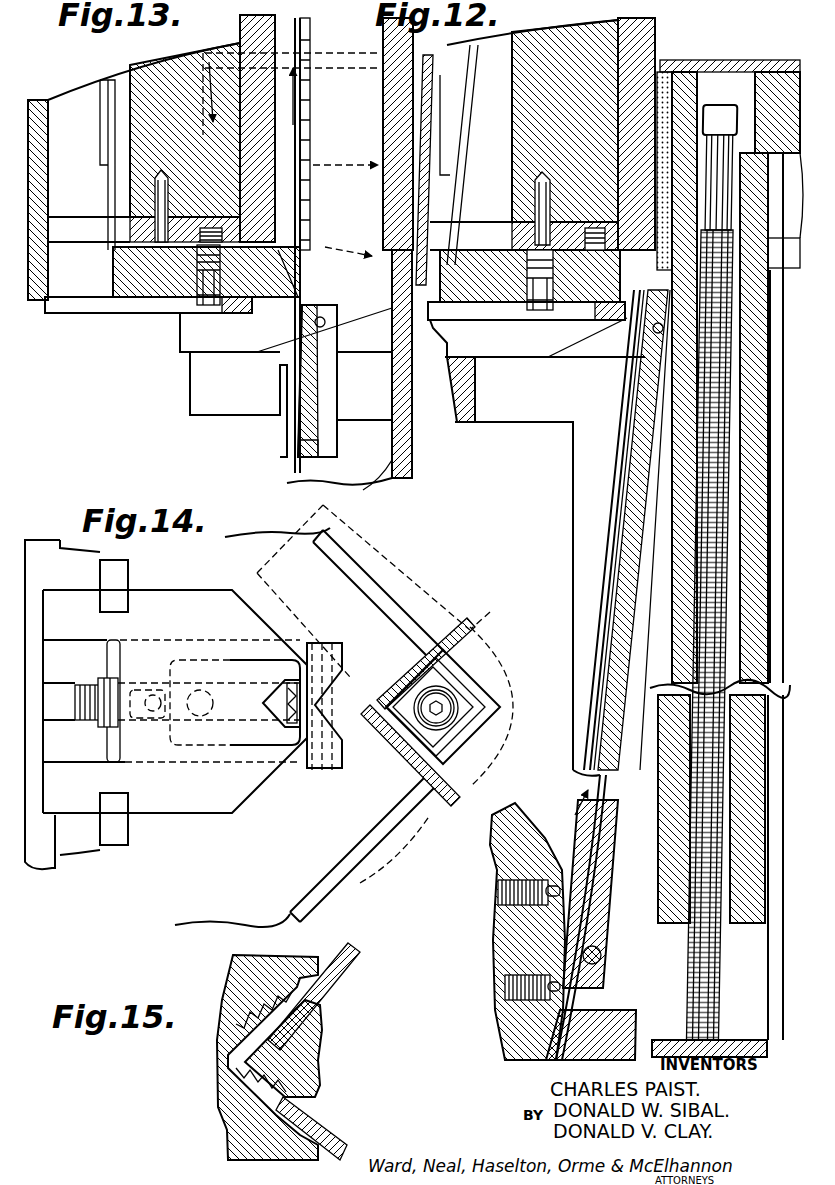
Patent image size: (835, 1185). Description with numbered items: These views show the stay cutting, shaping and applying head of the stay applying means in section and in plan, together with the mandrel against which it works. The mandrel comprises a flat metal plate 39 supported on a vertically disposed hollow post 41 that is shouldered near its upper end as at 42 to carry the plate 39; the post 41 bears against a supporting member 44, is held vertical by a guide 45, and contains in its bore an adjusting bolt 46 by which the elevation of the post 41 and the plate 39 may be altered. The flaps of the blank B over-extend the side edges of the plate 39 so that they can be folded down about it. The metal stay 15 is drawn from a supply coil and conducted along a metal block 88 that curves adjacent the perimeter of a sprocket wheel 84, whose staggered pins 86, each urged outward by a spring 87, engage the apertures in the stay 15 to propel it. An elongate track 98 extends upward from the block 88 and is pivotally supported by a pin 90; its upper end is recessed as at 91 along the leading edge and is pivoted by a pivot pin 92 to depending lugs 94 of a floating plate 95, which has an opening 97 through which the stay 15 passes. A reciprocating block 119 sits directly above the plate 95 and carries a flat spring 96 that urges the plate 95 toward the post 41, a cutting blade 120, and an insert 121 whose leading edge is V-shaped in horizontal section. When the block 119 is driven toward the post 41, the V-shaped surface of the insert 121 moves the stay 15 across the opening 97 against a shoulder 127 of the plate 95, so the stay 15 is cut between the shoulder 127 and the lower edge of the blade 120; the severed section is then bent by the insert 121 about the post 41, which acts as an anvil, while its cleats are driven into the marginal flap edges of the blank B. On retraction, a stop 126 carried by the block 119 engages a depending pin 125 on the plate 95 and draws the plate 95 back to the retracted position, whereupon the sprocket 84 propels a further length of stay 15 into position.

In FIG. 13, the metal stay 15 is at (294, 386).
In FIG. 12, the metal stay 15 is at (606, 545).
In FIG. 14, the metal stay 15 is at (278, 718).
In FIG. 15, the metal stay 15 is at (258, 1022).
In FIG. 12, the flat metal plate 39 is at (780, 75).
In FIG. 14, the flat metal plate 39 is at (449, 698).
In FIG. 13, the hollow post 41 is at (392, 478).
In FIG. 12, the hollow post 41 is at (757, 537).
In FIG. 14, the hollow post 41 is at (412, 760).
In FIG. 15, the hollow post 41 is at (322, 1040).
In FIG. 12, the shoulder 42 is at (770, 190).
In FIG. 14, the shoulder 42 is at (472, 702).
In FIG. 12, the supporting member 44 is at (742, 1040).
In FIG. 12, the guide 45 is at (772, 262).
In FIG. 12, the adjusting bolt 46 is at (735, 1005).
In FIG. 14, the adjusting bolt 46 is at (460, 688).
In FIG. 12, the sprocket wheel 84 is at (510, 836).
In FIG. 12, the pin 86 is at (500, 892).
In FIG. 12, the spring 87 is at (612, 835).
In FIG. 12, the metal block 88 is at (612, 1010).
In FIG. 12, the pin 90 is at (600, 950).
In FIG. 13, the recess 91 is at (328, 385).
In FIG. 12, the recess 91 is at (655, 405).
In FIG. 14, the recess 91 is at (324, 690).
In FIG. 13, the pivot pin 92 is at (326, 320).
In FIG. 12, the pivot pin 92 is at (653, 330).
In FIG. 14, the pivot pin 92 is at (327, 652).
In FIG. 13, the depending lug 94 is at (322, 340).
In FIG. 12, the depending lug 94 is at (635, 395).
In FIG. 13, the floating plate 95 is at (130, 262).
In FIG. 12, the floating plate 95 is at (480, 262).
In FIG. 14, the floating plate 95 is at (110, 661).
In FIG. 13, the flat spring 96 is at (108, 188).
In FIG. 12, the flat spring 96 is at (458, 152).
In FIG. 14, the flat spring 96 is at (92, 722).
In FIG. 13, the opening 97 is at (283, 300).
In FIG. 12, the opening 97 is at (636, 330).
In FIG. 13, the elongate track 98 is at (308, 446).
In FIG. 12, the elongate track 98 is at (640, 455).
In FIG. 13, the reciprocating block 119 is at (163, 72).
In FIG. 12, the reciprocating block 119 is at (525, 105).
In FIG. 14, the reciprocating block 119 is at (195, 598).
In FIG. 13, the cutting blade 120 is at (210, 228).
In FIG. 12, the cutting blade 120 is at (590, 228).
In FIG. 13, the insert 121 is at (245, 26).
In FIG. 12, the insert 121 is at (628, 42).
In FIG. 14, the insert 121 is at (248, 672).
In FIG. 15, the insert 121 is at (250, 958).
In FIG. 13, the depending pin 125 is at (200, 275).
In FIG. 12, the depending pin 125 is at (540, 285).
In FIG. 14, the depending pin 125 is at (213, 681).
In FIG. 13, the stop 126 is at (238, 313).
In FIG. 12, the stop 126 is at (600, 322).
In FIG. 14, the stop 126 is at (60, 768).
In FIG. 13, the shoulder 127 is at (312, 246).
In FIG. 13, the blank B is at (383, 108).
In FIG. 12, the blank B is at (690, 66).
In FIG. 14, the blank B is at (420, 643).
In FIG. 15, the blank B is at (360, 978).